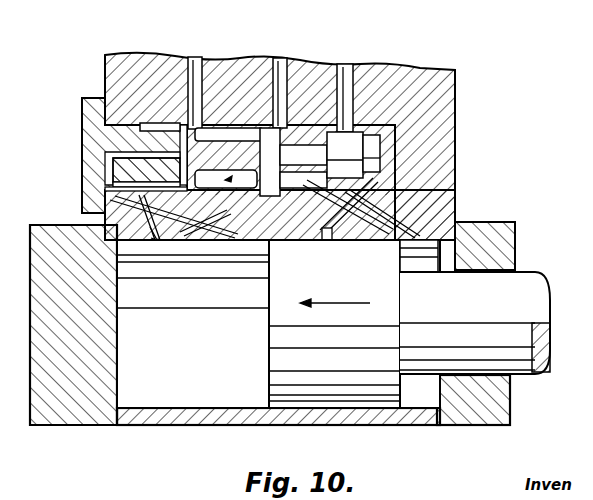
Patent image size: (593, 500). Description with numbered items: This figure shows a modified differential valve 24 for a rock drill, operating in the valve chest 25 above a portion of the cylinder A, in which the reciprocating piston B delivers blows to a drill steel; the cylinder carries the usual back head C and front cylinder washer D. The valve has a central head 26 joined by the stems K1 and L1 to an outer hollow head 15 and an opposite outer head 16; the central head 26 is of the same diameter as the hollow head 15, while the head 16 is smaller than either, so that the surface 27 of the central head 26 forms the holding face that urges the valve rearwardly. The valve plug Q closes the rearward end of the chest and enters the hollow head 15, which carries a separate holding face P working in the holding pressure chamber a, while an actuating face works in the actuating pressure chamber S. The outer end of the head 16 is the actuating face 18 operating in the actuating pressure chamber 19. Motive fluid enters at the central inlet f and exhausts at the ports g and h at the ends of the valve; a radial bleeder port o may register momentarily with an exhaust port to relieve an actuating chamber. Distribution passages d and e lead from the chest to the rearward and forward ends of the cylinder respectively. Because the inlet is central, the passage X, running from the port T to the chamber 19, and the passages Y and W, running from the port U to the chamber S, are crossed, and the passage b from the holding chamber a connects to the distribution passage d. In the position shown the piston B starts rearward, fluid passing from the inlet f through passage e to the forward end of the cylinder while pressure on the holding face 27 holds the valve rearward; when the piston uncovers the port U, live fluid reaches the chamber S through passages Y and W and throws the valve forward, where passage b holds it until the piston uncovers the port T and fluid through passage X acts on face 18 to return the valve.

The holding face P is at (140, 123).
The valve plug Q is at (97, 133).
The actuating pressure chamber S is at (123, 154).
The passage W is at (123, 159).
The radial bleeder port o is at (128, 175).
The holding pressure chamber a is at (110, 193).
The passage b is at (103, 217).
The distribution passage d is at (163, 222).
The passage Y is at (223, 217).
The port T is at (247, 210).
The passage X is at (305, 229).
The port U is at (327, 242).
The distribution passage e is at (360, 240).
The back head C is at (80, 407).
The piston B is at (280, 387).
The cylinder A is at (403, 427).
The front cylinder washer D is at (477, 425).
The exhaust port g is at (170, 127).
The inlet f is at (288, 133).
The exhaust port h is at (350, 130).
The stem K1 is at (203, 130).
The stem L1 is at (355, 145).
The outer hollow head 15 is at (143, 123).
The outer head 16 is at (403, 140).
The actuating pressure face 18 is at (457, 100).
The actuating pressure chamber 19 is at (395, 170).
The differential valve 24 is at (247, 152).
The valve chest 25 is at (395, 83).
The central head 26 is at (305, 150).
The holding face 27 is at (305, 123).